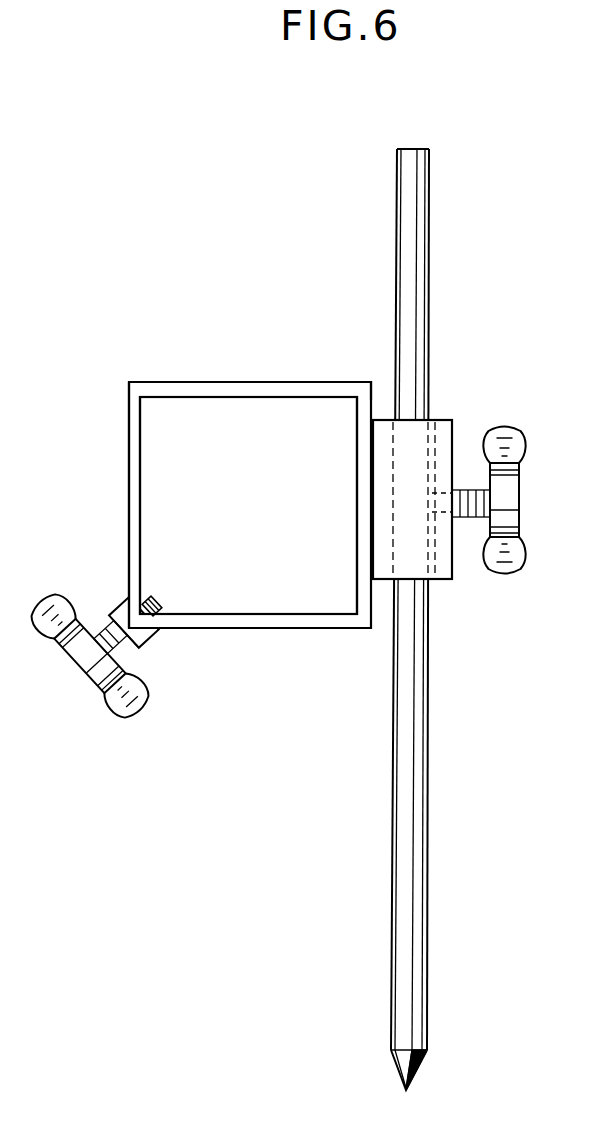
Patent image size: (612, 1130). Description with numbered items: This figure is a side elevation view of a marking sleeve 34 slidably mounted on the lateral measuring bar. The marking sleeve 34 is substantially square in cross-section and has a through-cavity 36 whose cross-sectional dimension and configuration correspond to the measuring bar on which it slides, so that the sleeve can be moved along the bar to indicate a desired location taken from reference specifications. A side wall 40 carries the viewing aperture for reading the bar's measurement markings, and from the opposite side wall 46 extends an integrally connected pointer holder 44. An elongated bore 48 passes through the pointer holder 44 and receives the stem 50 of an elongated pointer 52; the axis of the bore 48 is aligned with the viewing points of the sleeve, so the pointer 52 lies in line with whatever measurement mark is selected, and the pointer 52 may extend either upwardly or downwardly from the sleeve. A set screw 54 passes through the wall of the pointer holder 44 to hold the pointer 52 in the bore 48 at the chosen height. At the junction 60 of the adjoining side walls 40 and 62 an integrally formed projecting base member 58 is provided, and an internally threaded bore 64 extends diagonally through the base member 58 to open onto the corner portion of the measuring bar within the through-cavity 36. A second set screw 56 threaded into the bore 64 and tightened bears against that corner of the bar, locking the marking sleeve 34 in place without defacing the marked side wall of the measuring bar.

The marking sleeve 34 is at (325, 630).
The through-cavity 36 is at (249, 418).
The side wall 40 is at (130, 452).
The pointer holder 44 is at (440, 580).
The opposite side wall 46 is at (374, 398).
The elongated bore 48 is at (432, 420).
The stem 50 is at (422, 882).
The elongated pointer 52 is at (430, 203).
The set screw 54 is at (522, 497).
The set screw 56 is at (80, 666).
The projecting base member 58 is at (125, 601).
The junction 60 is at (158, 613).
The side wall 62 is at (268, 630).
The internally threaded bore 64 is at (152, 642).